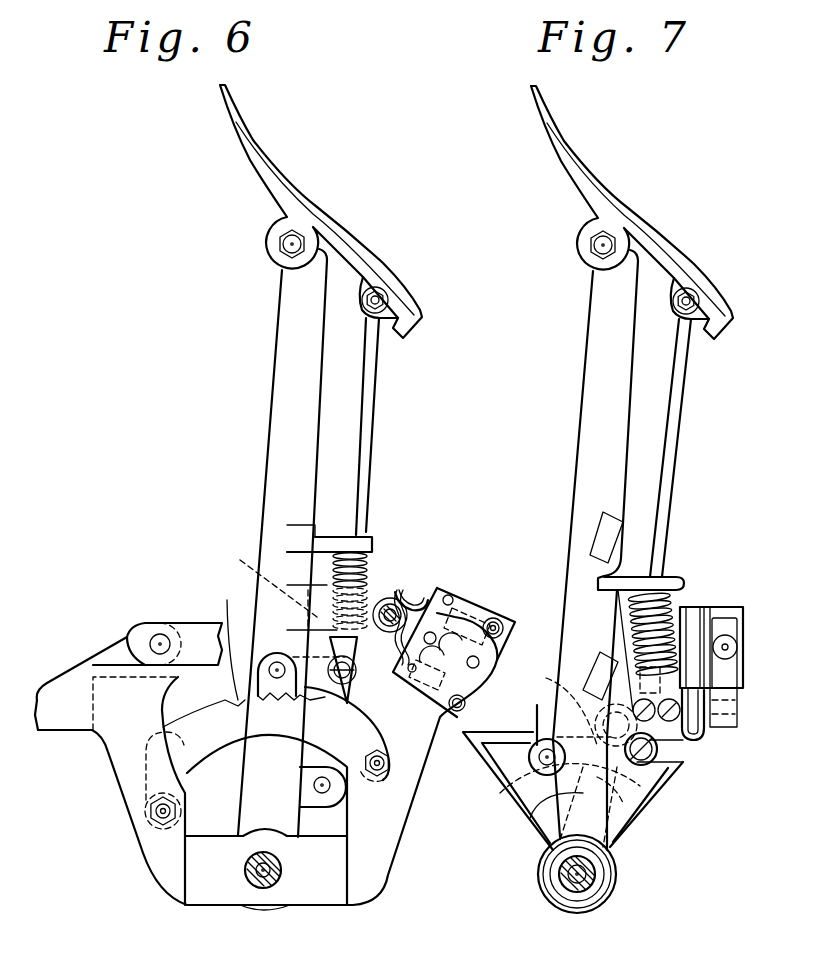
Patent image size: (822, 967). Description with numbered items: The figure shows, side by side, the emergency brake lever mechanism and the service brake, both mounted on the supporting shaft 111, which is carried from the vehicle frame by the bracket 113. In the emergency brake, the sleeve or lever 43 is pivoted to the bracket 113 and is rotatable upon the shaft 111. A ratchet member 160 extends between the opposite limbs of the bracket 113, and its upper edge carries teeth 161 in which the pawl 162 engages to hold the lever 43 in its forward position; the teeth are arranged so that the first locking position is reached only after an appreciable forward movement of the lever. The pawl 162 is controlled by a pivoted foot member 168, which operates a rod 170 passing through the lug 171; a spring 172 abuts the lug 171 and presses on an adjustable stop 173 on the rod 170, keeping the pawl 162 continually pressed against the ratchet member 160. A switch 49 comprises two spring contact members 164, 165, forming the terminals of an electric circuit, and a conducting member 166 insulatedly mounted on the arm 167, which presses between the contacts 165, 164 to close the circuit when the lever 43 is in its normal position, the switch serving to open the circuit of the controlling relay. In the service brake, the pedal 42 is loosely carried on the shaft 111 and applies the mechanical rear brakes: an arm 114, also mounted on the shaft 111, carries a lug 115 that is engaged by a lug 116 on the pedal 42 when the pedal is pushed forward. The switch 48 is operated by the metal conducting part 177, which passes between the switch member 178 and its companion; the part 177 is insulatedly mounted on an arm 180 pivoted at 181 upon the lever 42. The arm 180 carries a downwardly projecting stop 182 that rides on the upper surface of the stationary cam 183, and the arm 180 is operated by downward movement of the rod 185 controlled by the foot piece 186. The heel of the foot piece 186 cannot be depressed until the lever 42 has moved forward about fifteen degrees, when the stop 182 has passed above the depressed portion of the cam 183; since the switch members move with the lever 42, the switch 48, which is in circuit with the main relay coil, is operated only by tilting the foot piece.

In FIG. 6, the pivoted foot member 168 is at (316, 238).
In FIG. 6, the emergency brake lever 43 is at (287, 482).
In FIG. 6, the rod 170 is at (365, 410).
In FIG. 6, the lug 171 is at (320, 540).
In FIG. 6, the spring 172 is at (363, 567).
In FIG. 6, the adjustable stop 173 is at (260, 580).
In FIG. 6, the teeth 161 is at (218, 642).
In FIG. 6, the spring contact member 164 is at (397, 592).
In FIG. 6, the arm 167 is at (374, 600).
In FIG. 6, the conducting member 166 is at (400, 592).
In FIG. 6, the switch 49 is at (440, 593).
In FIG. 6, the spring contact member 165 is at (350, 663).
In FIG. 6, the pawl 162 is at (357, 702).
In FIG. 6, the ratchet member 160 is at (212, 740).
In FIG. 6, the bracket 113 is at (222, 890).
In FIG. 6, the supporting shaft 111 is at (267, 887).
In FIG. 7, the supporting shaft 111 is at (590, 890).
In FIG. 7, the foot piece 186 is at (640, 228).
In FIG. 7, the service brake pedal 42 is at (603, 368).
In FIG. 7, the rod 185 is at (670, 497).
In FIG. 7, the switch 48 is at (737, 684).
In FIG. 7, the switch member 178 is at (727, 668).
In FIG. 7, the metal conducting part 177 is at (712, 733).
In FIG. 7, the arm 180 is at (680, 752).
In FIG. 7, the arm 114 is at (570, 727).
In FIG. 7, the pivot 181 is at (547, 737).
In FIG. 7, the stop 182 is at (647, 790).
In FIG. 7, the lug 115 is at (512, 793).
In FIG. 7, the lug 116 is at (620, 825).
In FIG. 7, the cam 183 is at (532, 817).